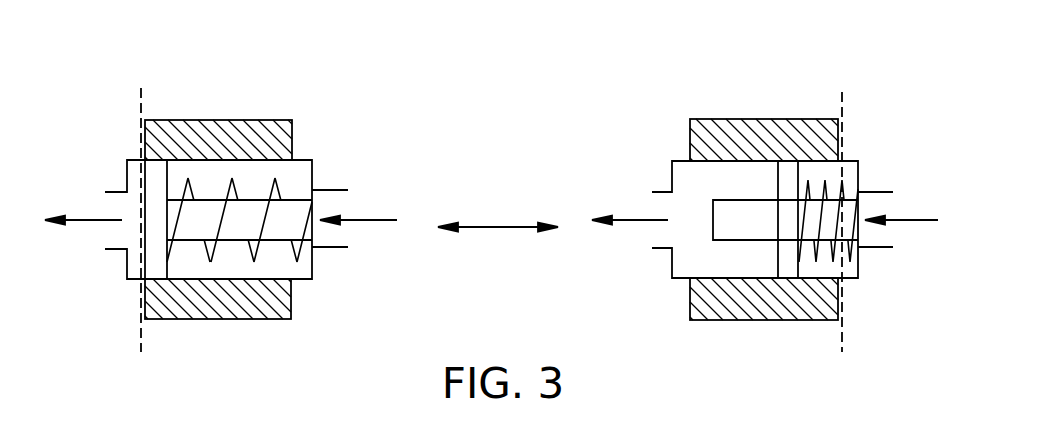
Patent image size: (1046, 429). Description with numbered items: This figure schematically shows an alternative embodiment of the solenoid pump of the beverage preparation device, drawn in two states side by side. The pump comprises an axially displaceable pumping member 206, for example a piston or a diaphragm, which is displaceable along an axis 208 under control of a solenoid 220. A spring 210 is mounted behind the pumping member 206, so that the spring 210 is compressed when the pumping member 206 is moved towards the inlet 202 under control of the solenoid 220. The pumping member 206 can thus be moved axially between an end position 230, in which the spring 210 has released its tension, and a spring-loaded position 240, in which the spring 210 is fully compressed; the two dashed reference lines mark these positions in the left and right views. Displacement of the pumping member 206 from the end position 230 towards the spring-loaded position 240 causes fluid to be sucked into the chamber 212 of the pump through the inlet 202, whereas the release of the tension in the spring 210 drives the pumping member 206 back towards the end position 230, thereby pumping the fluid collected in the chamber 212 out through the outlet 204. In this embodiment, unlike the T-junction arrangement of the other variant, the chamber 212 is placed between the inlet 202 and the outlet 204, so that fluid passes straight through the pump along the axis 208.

The inlet 202 is at (377, 219).
The outlet 204 is at (88, 218).
The pumping member 206 is at (155, 168).
The axis 208 is at (300, 197).
The spring 210 is at (298, 252).
The chamber 212 is at (298, 167).
The solenoid 220 is at (293, 300).
The end position 230 is at (141, 327).
The spring-loaded position 240 is at (842, 328).